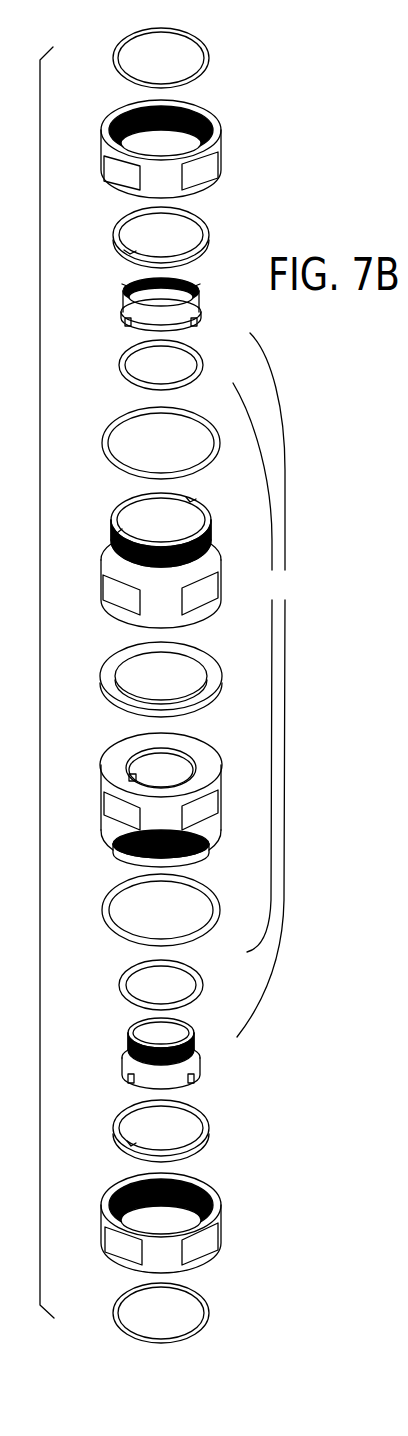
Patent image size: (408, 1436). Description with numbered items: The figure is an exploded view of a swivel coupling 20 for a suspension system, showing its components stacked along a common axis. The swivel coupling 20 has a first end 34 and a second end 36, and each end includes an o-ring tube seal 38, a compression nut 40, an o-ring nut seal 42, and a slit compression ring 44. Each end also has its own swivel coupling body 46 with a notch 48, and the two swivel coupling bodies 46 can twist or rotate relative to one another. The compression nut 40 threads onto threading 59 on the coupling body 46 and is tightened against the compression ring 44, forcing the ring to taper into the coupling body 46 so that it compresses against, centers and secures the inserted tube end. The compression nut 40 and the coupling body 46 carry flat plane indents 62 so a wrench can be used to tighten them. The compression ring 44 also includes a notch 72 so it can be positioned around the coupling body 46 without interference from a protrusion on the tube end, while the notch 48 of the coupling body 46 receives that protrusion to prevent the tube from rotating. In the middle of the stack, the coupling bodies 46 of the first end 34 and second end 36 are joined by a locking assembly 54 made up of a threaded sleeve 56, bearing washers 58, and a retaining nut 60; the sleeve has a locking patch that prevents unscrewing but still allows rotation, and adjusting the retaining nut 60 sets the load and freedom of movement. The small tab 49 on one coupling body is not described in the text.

The swivel coupling 20 is at (89, 36).
The first end 34 is at (250, 120).
The second end 36 is at (94, 1286).
The o-ring tube seal 38 is at (114, 66).
The compression nut 40 is at (108, 128).
The o-ring nut seal 42 is at (108, 428).
The slit compression ring 44 is at (200, 225).
The swivel coupling body 46 is at (115, 577).
The notch 48 is at (115, 540).
The tab 49 is at (128, 857).
The locking assembly 54 is at (247, 610).
The threaded sleeve 56 is at (190, 1063).
The bearing washers 58 is at (193, 347).
The threading 59 is at (207, 542).
The retaining nut 60 is at (195, 317).
The flat plane indents 62 is at (122, 170).
The notch 72 is at (128, 262).